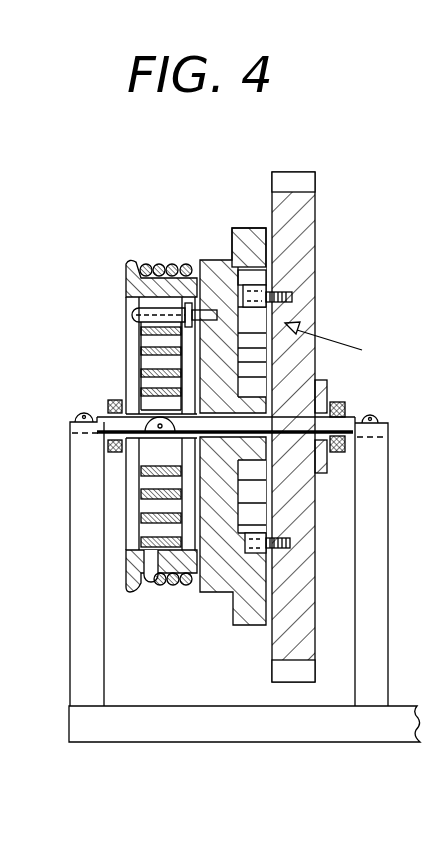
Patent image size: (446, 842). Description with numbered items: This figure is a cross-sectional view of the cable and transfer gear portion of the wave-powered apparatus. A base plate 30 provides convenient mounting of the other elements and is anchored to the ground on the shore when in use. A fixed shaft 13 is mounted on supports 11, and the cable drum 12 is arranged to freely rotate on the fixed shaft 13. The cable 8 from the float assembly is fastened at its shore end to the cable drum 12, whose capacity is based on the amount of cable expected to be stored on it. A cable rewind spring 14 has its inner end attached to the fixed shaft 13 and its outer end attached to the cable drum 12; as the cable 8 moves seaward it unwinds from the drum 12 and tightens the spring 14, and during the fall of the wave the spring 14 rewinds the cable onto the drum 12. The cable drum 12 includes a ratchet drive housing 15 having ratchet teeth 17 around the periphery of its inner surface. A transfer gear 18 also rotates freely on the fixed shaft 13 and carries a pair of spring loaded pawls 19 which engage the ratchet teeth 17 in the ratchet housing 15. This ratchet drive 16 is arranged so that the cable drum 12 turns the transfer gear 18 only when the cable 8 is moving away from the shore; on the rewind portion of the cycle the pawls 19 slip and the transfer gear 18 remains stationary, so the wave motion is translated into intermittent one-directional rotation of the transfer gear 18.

The cable 8 is at (158, 262).
The supports 11 is at (74, 558).
The cable drum 12 is at (129, 289).
The fixed shaft 13 is at (102, 413).
The cable rewind spring 14 is at (140, 350).
The ratchet drive housing 15 is at (250, 232).
The ratchet drive 16 is at (337, 343).
The ratchet teeth 17 is at (258, 278).
The transfer gear 18 is at (312, 208).
The spring loaded pawls 19 is at (265, 292).
The base plate 30 is at (399, 717).